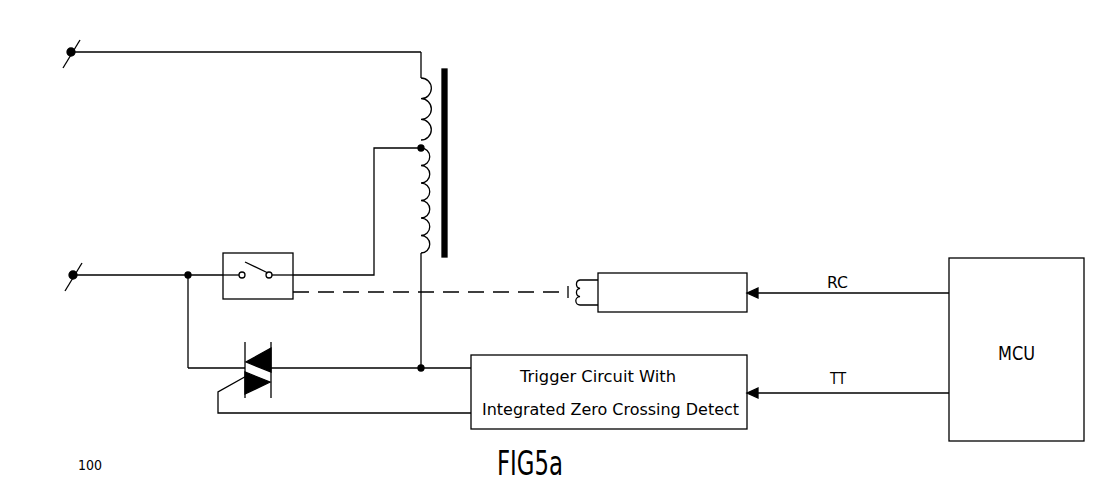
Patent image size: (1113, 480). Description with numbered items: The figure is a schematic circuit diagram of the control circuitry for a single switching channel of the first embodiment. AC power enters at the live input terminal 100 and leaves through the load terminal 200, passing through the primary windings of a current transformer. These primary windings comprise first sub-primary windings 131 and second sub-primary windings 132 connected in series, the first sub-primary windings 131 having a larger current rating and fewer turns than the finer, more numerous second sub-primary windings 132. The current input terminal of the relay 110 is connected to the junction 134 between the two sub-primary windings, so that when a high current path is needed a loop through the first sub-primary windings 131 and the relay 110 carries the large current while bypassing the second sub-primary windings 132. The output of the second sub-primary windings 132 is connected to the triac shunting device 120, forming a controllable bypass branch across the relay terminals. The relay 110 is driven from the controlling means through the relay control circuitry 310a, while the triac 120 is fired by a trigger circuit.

The input terminal 100 is at (242, 46).
The load terminal 200 is at (144, 262).
The relay 110 is at (258, 257).
The shunting device 120 is at (329, 344).
The first sub-primary windings 131 is at (434, 86).
The junction 134 is at (429, 146).
The second sub-primary windings 132 is at (430, 204).
The relay control circuitry 310a is at (661, 283).